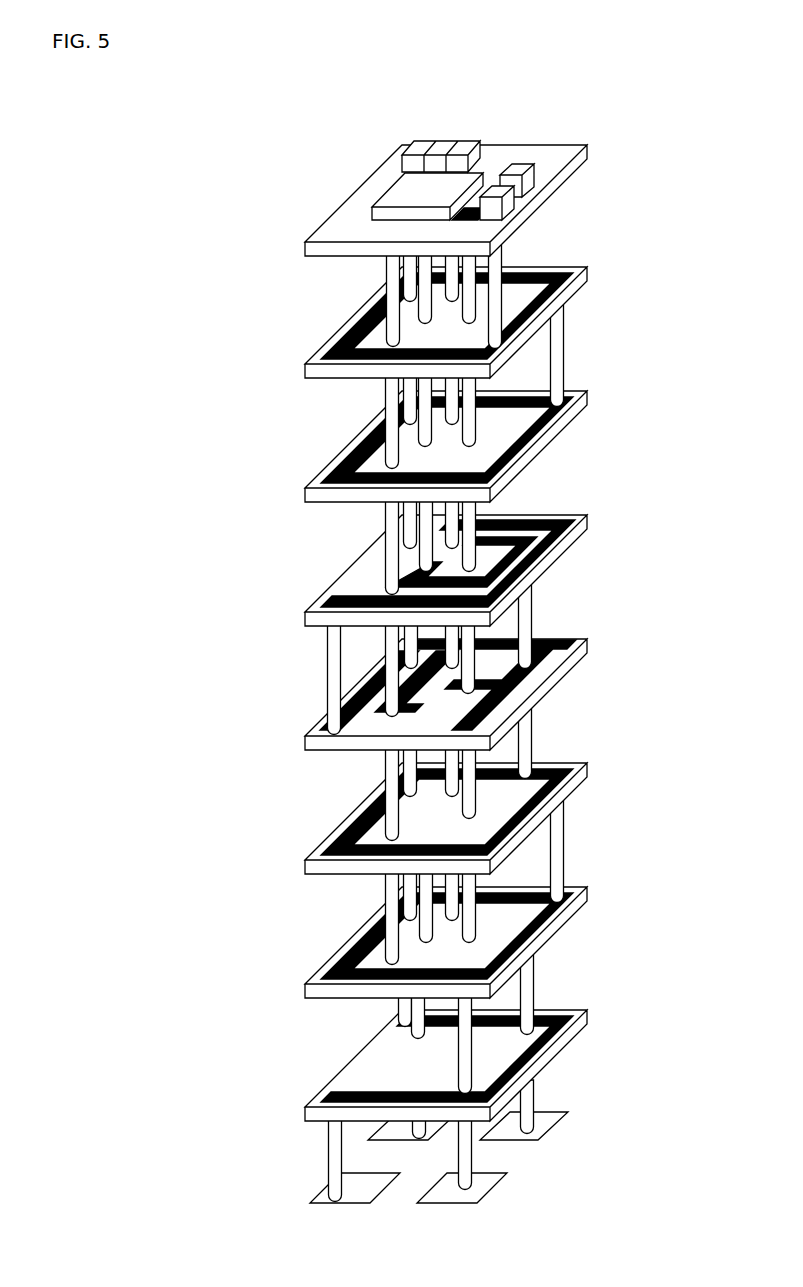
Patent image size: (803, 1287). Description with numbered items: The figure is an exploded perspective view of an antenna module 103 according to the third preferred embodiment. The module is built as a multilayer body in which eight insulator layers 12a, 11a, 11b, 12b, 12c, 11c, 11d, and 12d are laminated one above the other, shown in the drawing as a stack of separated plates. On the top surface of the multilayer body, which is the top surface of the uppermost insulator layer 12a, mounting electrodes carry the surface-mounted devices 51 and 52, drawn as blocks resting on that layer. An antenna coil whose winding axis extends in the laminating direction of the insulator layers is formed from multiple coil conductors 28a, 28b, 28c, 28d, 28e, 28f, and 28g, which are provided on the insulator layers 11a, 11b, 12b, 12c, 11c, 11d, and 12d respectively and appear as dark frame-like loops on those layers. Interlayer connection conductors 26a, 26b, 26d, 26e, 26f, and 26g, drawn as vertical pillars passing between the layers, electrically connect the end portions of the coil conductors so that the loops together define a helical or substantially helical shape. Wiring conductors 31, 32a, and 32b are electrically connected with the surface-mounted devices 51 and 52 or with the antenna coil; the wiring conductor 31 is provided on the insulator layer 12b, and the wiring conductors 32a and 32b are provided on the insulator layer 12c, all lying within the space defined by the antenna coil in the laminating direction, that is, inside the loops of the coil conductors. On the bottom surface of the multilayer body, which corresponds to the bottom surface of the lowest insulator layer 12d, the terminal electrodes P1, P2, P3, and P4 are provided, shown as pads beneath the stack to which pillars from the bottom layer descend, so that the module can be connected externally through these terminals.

The antenna module 103 is at (736, 88).
The insulator layer 12a is at (587, 145).
The insulator layer 12b is at (587, 517).
The insulator layer 12c is at (587, 641).
The insulator layer 12d is at (587, 1013).
The insulator layer 11a is at (587, 267).
The insulator layer 11b is at (587, 393).
The insulator layer 11c is at (587, 765).
The insulator layer 11d is at (587, 889).
The interlayer connection conductor 26a is at (497, 265).
The interlayer connection conductor 26b is at (558, 343).
The interlayer connection conductor 26d is at (333, 670).
The interlayer connection conductor 26e is at (480, 800).
The interlayer connection conductor 26f is at (565, 832).
The interlayer connection conductor 26g is at (395, 1008).
The coil conductor 28a is at (365, 312).
The coil conductor 28b is at (362, 437).
The coil conductor 28c is at (530, 522).
The coil conductor 28d is at (540, 682).
The coil conductor 28e is at (360, 826).
The coil conductor 28f is at (360, 934).
The coil conductor 28g is at (535, 1052).
The wiring conductor 31 is at (418, 577).
The wiring conductor 32a is at (403, 711).
The wiring conductor 32b is at (460, 707).
The surface-mounted device 51 is at (400, 193).
The surface-mounted device 52 is at (516, 172).
The terminal electrode P1 is at (322, 1194).
The terminal electrode P2 is at (482, 1188).
The terminal electrode P3 is at (548, 1125).
The terminal electrode P4 is at (382, 1128).